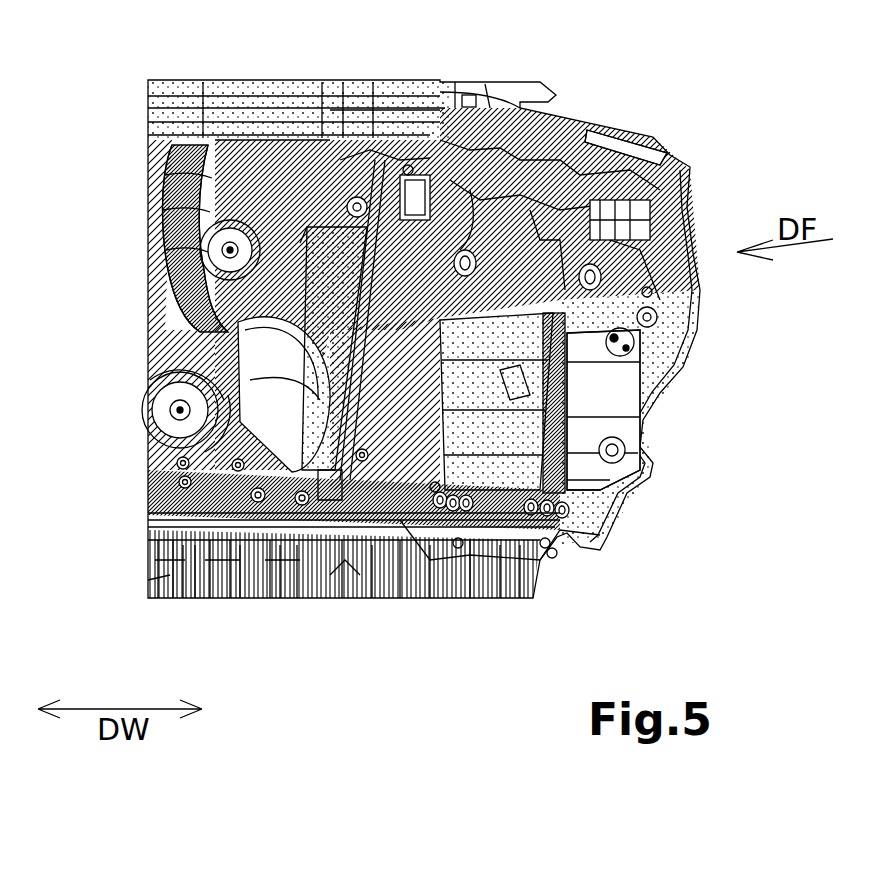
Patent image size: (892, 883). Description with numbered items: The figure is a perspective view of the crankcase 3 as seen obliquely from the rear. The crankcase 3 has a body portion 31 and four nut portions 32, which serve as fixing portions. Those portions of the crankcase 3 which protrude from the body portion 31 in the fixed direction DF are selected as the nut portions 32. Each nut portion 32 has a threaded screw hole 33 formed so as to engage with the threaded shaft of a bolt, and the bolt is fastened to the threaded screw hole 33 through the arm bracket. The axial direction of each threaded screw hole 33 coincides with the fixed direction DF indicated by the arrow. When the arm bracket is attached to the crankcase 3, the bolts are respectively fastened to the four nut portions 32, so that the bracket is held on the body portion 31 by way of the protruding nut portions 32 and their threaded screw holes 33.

The crankcase 3 is at (421, 339).
The body portion 31 is at (330, 480).
The nut portion 32 is at (408, 165).
The threaded screw hole 33 is at (470, 100).